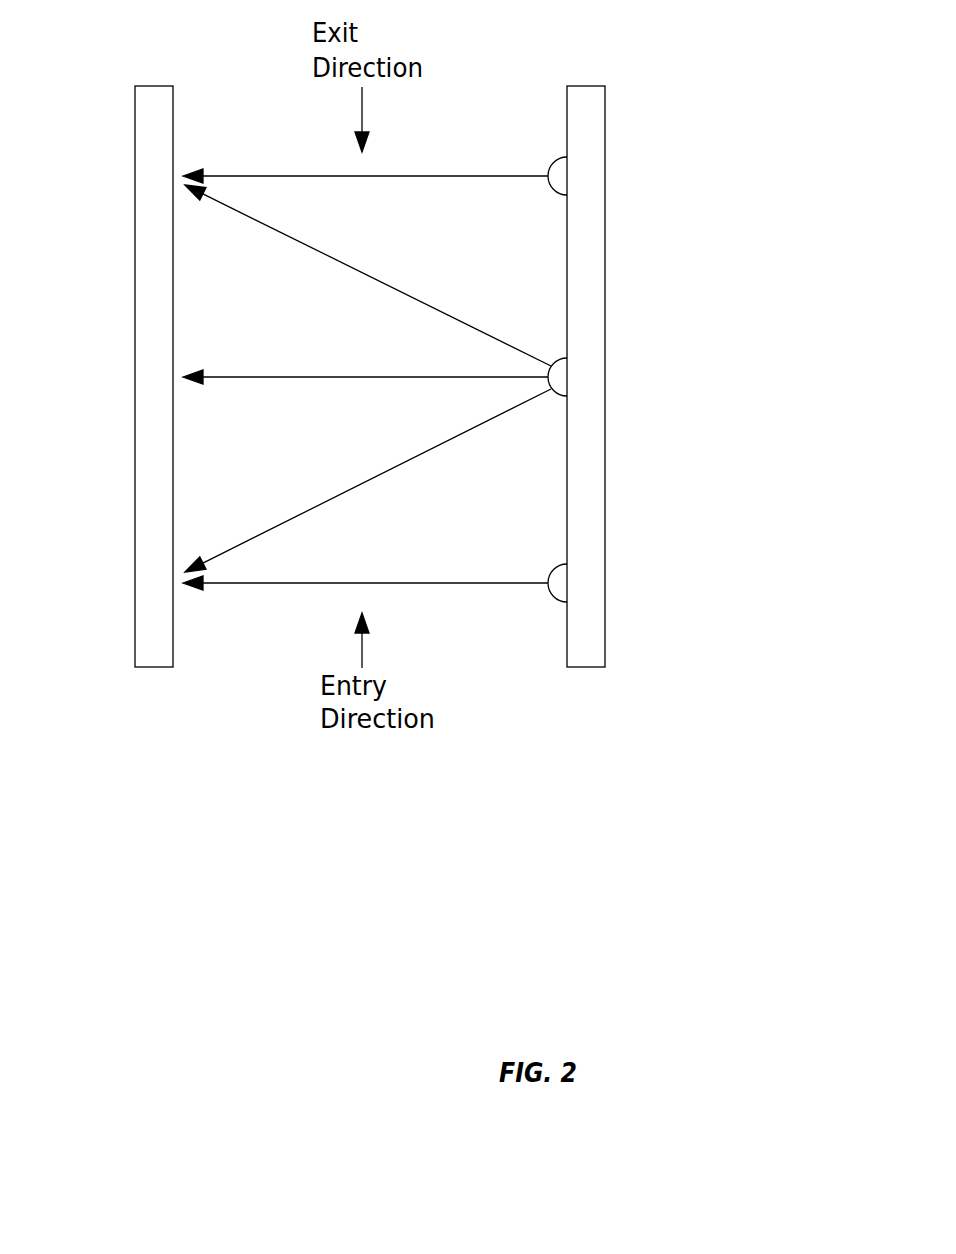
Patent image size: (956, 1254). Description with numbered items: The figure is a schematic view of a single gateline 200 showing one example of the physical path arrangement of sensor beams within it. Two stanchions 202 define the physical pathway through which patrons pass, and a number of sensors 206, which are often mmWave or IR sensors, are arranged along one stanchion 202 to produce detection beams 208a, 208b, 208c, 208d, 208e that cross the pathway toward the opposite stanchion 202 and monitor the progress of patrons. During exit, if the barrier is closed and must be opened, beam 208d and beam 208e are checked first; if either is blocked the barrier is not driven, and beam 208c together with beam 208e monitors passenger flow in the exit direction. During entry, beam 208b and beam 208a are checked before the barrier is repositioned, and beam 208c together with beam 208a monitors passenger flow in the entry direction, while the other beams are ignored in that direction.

The gateline 200 is at (214, 826).
The stanchion 202 is at (137, 347).
The sensor 206 is at (562, 176).
The beam 208a is at (330, 583).
The beam 208b is at (513, 415).
The beam 208c is at (342, 377).
The beam 208d is at (313, 248).
The beam 208e is at (487, 176).